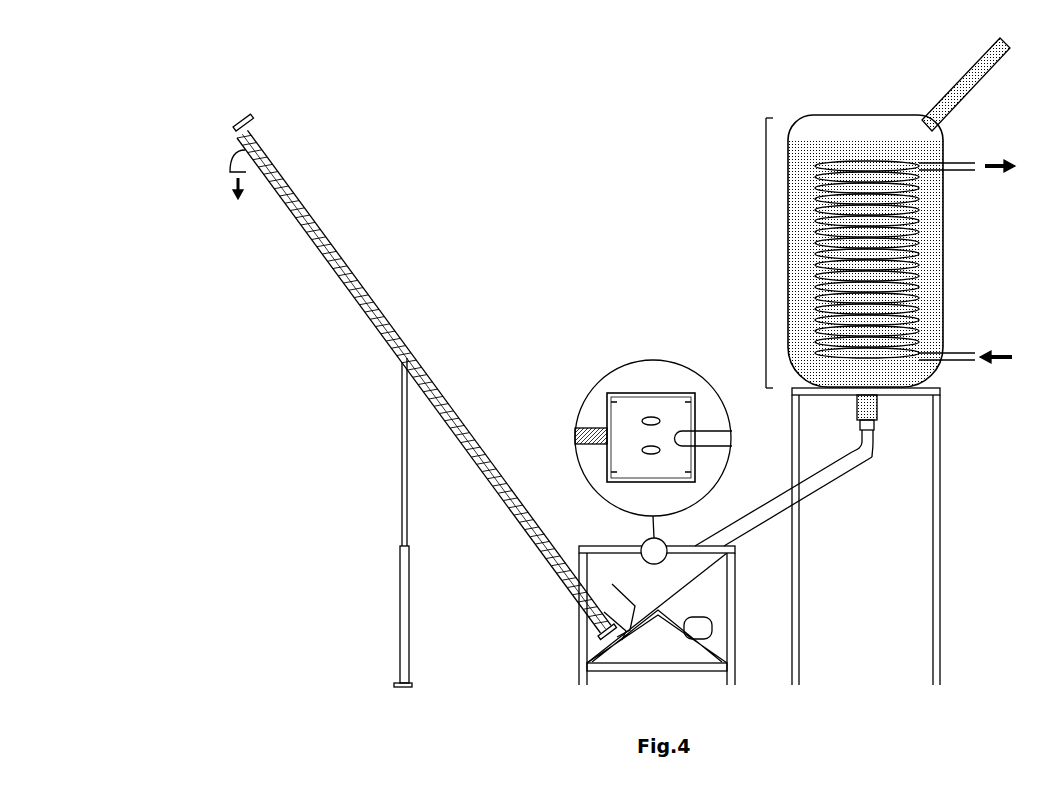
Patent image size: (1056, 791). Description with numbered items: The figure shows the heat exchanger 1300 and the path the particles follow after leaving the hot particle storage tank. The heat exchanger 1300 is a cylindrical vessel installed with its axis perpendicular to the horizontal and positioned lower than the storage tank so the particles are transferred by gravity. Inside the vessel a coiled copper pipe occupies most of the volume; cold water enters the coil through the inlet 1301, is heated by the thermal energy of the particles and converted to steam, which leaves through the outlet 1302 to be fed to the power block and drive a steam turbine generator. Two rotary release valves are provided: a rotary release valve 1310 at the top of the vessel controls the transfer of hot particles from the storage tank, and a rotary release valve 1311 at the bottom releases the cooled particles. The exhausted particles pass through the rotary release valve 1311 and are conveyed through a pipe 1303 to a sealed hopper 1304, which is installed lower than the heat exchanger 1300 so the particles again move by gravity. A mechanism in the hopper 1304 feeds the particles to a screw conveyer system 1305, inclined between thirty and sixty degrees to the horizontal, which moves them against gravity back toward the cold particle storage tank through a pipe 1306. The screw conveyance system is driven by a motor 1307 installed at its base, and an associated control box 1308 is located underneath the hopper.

The heat exchanger 1300 is at (829, 400).
The inlet 1301 is at (963, 347).
The outlet 1302 is at (965, 155).
The pipe 1303 is at (823, 495).
The sealed hopper 1304 is at (655, 511).
The screw conveyer system 1305 is at (375, 288).
The pipe 1306 is at (222, 160).
The motor 1307 is at (607, 598).
The control box 1308 is at (705, 628).
The rotary release valve 1310 is at (925, 108).
The rotary release valve 1311 is at (878, 430).